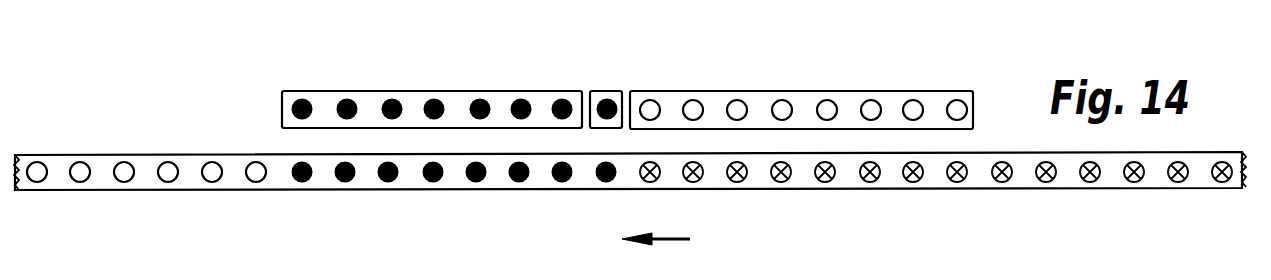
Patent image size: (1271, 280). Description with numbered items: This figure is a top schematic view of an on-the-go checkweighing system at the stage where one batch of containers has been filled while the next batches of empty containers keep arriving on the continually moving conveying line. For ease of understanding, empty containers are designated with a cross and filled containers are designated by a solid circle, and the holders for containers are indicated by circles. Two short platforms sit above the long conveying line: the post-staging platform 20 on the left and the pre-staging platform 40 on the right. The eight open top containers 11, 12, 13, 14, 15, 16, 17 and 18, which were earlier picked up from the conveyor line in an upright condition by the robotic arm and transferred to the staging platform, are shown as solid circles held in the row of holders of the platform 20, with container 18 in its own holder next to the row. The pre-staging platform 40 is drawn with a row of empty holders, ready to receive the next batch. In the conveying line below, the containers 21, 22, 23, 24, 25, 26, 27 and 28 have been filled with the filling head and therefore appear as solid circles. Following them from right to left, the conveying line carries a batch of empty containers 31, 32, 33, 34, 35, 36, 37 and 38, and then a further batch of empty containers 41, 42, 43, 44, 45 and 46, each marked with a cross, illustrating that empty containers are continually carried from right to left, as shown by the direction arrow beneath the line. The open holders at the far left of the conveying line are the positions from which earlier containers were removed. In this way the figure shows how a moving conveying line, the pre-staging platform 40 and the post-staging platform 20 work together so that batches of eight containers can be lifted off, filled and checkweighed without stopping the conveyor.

The open top container 11 is at (304, 97).
The open top container 12 is at (349, 97).
The open top container 13 is at (394, 97).
The open top container 14 is at (436, 97).
The open top container 15 is at (482, 97).
The open top container 16 is at (523, 97).
The open top container 17 is at (564, 97).
The open top container 18 is at (609, 97).
The post-staging platform 20 is at (282, 101).
The filled container 21 is at (302, 182).
The filled container 22 is at (345, 182).
The filled container 23 is at (388, 182).
The filled container 24 is at (433, 182).
The filled container 25 is at (476, 182).
The filled container 26 is at (519, 182).
The filled container 27 is at (562, 182).
The filled container 28 is at (606, 182).
The empty container 31 is at (650, 182).
The empty container 32 is at (693, 182).
The empty container 33 is at (737, 182).
The empty container 34 is at (781, 182).
The empty container 35 is at (825, 182).
The empty container 36 is at (870, 182).
The empty container 37 is at (913, 182).
The empty container 38 is at (957, 182).
The pre-staging platform 40 is at (973, 103).
The empty container 41 is at (1002, 182).
The empty container 42 is at (1046, 182).
The empty container 43 is at (1090, 182).
The empty container 44 is at (1134, 182).
The empty container 45 is at (1178, 182).
The empty container 46 is at (1222, 182).